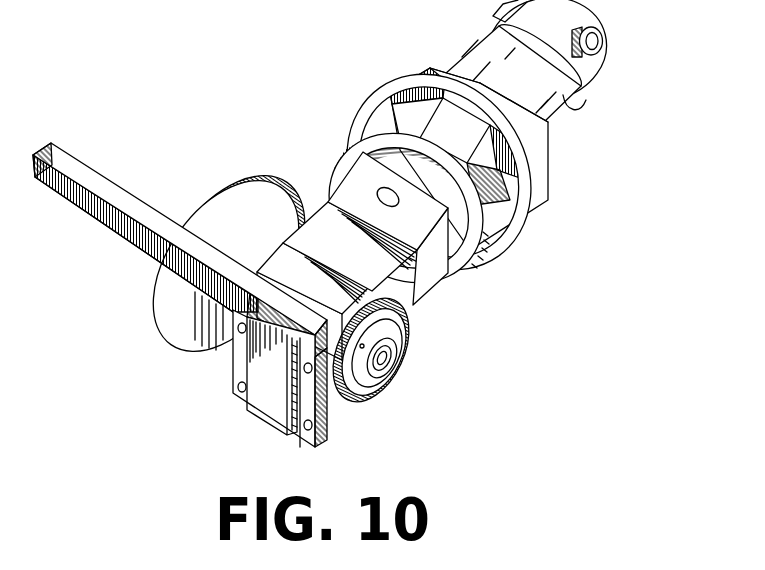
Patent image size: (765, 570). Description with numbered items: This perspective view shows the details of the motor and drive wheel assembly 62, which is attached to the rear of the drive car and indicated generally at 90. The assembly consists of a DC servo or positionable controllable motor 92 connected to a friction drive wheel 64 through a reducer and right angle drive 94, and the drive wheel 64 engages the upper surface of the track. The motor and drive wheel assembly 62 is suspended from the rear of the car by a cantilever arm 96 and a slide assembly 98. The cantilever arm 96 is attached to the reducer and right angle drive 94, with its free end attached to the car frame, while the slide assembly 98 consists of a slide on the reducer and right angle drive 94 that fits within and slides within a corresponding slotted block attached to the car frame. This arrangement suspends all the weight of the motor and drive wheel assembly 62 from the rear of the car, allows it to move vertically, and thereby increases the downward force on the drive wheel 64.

The drive assembly 90 is at (297, 23).
The motor and drive wheel assembly 62 is at (533, 209).
The DC servo or positionable controllable motor 92 is at (604, 58).
The reducer and right angle drive 94 is at (466, 232).
The friction drive wheel 64 is at (213, 212).
The cantilever arm 96 is at (130, 228).
The slide assembly 98 is at (260, 412).